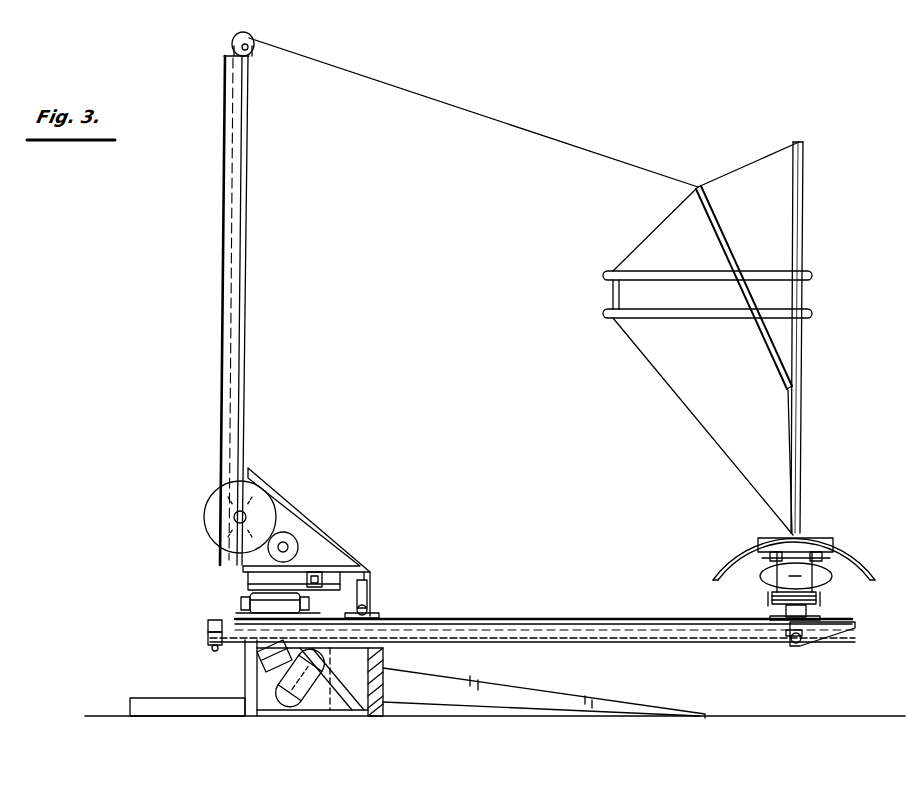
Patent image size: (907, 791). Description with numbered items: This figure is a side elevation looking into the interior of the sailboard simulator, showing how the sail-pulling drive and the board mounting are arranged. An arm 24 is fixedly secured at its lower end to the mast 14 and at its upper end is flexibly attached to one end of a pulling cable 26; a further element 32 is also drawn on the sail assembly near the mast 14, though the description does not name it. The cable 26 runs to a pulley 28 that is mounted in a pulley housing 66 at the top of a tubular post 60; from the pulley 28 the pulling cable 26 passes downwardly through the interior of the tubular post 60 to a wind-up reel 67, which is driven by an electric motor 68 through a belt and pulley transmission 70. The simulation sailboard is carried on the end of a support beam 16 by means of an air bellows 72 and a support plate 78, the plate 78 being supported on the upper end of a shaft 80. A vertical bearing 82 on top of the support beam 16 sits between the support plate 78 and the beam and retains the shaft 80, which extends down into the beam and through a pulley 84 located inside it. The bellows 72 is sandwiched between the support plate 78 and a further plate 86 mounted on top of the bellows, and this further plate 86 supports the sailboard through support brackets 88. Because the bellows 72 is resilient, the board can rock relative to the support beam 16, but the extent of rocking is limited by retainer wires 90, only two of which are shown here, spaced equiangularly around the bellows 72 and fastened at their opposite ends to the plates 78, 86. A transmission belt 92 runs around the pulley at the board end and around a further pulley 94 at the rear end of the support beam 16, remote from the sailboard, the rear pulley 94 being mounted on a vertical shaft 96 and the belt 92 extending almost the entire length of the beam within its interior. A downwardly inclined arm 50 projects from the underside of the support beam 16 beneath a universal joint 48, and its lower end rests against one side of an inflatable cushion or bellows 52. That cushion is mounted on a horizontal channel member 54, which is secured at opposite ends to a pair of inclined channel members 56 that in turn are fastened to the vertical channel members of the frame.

The mast 14 is at (805, 254).
The support beam 16 is at (538, 618).
The arm 24 is at (721, 214).
The pulling cable 26 is at (508, 118).
The pulley 28 is at (253, 56).
The sail edge line 32 is at (662, 388).
The universal joint 48 is at (372, 604).
The downwardly inclined arm 50 is at (383, 668).
The inflatable cushion or bellows 52 is at (282, 697).
The horizontal channel member 54 is at (262, 666).
The inclined channel members 56 is at (383, 690).
The tubular post 60 is at (250, 292).
The pulley housing 66 is at (232, 44).
The wind-up reel 67 is at (276, 492).
The electric motor 68 is at (300, 548).
The belt and pulley transmission 70 is at (284, 530).
The air bellows 72 is at (832, 578).
The support plate 78 is at (820, 598).
The shaft 80 is at (794, 646).
The vertical bearing 82 is at (806, 612).
The pulley 84 is at (800, 646).
The further plate 86 is at (762, 570).
The support brackets 88 is at (752, 544).
The retainer wires 90 is at (764, 590).
The transmission belt 92 is at (614, 622).
The pulley 94 is at (208, 626).
The vertical shaft 96 is at (208, 640).